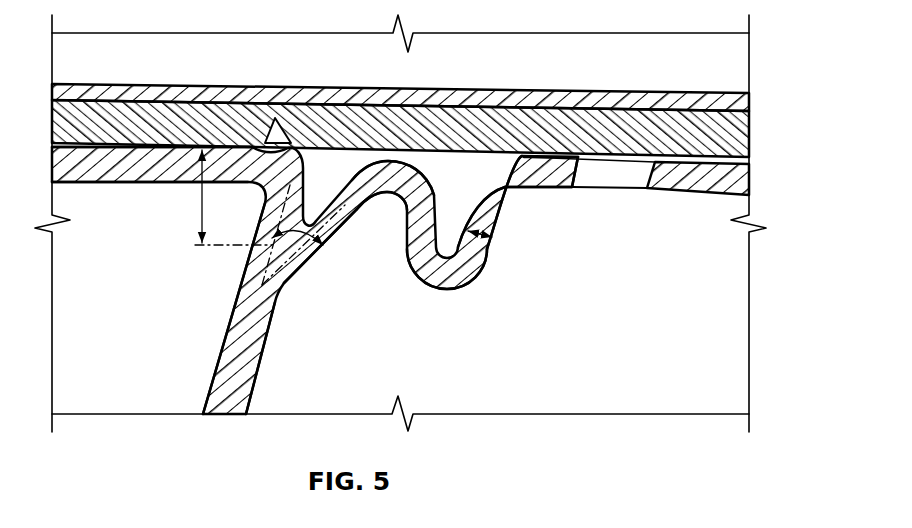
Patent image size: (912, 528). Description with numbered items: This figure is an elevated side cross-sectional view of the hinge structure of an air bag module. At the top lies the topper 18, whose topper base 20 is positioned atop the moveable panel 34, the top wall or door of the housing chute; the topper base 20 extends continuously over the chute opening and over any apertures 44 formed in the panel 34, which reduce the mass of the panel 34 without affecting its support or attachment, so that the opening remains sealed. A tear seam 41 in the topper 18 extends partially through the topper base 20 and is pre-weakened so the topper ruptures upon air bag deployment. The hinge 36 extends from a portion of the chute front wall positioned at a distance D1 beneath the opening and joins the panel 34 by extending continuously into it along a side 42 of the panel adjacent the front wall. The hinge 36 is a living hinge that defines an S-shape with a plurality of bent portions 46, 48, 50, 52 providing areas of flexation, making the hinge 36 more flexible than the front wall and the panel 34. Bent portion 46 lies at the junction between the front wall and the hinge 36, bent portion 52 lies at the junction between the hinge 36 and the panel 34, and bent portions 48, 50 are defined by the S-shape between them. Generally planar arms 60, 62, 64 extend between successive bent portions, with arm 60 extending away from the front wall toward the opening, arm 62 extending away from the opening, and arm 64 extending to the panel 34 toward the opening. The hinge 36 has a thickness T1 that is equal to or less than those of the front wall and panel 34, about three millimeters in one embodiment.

The topper 18 is at (683, 86).
The topper base 20 is at (605, 120).
The moveable panel 34 is at (555, 178).
The hinge 36 is at (419, 160).
The tear seam 41 is at (281, 141).
The side of panel 42 is at (538, 167).
The apertures 44 is at (610, 178).
The bent portion 46 is at (342, 225).
The bent portion 48 is at (384, 185).
The bent portion 50 is at (443, 290).
The bent portion 52 is at (513, 184).
The arm 60 is at (349, 208).
The arm 62 is at (384, 198).
The arm 64 is at (485, 218).
The distance D1 is at (202, 210).
The thickness T1 is at (488, 240).